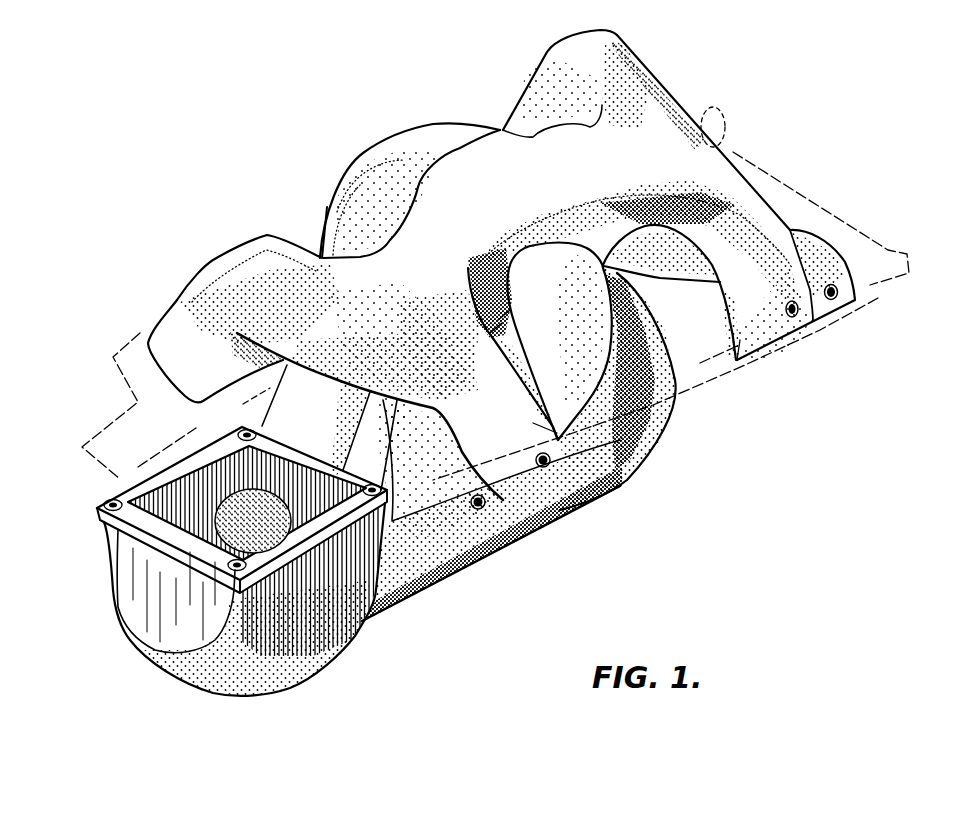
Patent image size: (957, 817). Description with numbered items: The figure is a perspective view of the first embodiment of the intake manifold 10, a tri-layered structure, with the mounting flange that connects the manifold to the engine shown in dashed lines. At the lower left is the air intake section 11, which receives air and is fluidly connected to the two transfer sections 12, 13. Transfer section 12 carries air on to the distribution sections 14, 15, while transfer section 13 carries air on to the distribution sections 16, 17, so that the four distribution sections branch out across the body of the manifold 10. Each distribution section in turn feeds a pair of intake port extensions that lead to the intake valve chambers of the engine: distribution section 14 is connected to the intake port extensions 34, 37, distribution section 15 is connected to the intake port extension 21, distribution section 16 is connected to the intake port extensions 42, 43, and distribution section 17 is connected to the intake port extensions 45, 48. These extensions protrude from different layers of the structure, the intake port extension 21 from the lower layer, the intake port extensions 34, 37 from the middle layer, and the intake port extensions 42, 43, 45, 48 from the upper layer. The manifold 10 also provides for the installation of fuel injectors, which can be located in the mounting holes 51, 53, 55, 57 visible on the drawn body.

The manifold 10 is at (101, 716).
The air intake section 11 is at (215, 670).
The transfer section 12 is at (620, 470).
The transfer section 13 is at (350, 208).
The distribution section 14 is at (530, 316).
The distribution section 15 is at (671, 292).
The distribution section 16 is at (405, 276).
The distribution section 17 is at (547, 174).
The intake port extension 21 is at (425, 518).
The intake port extension 34 is at (243, 404).
The intake port extension 37 is at (806, 275).
The intake port extension 42 is at (190, 313).
The intake port extension 43 is at (537, 420).
The intake port extension 45 is at (752, 333).
The intake port extension 48 is at (548, 97).
The mounting hole 51 is at (491, 504).
The mounting hole 53 is at (547, 497).
The mounting hole 55 is at (806, 330).
The mounting hole 57 is at (838, 303).